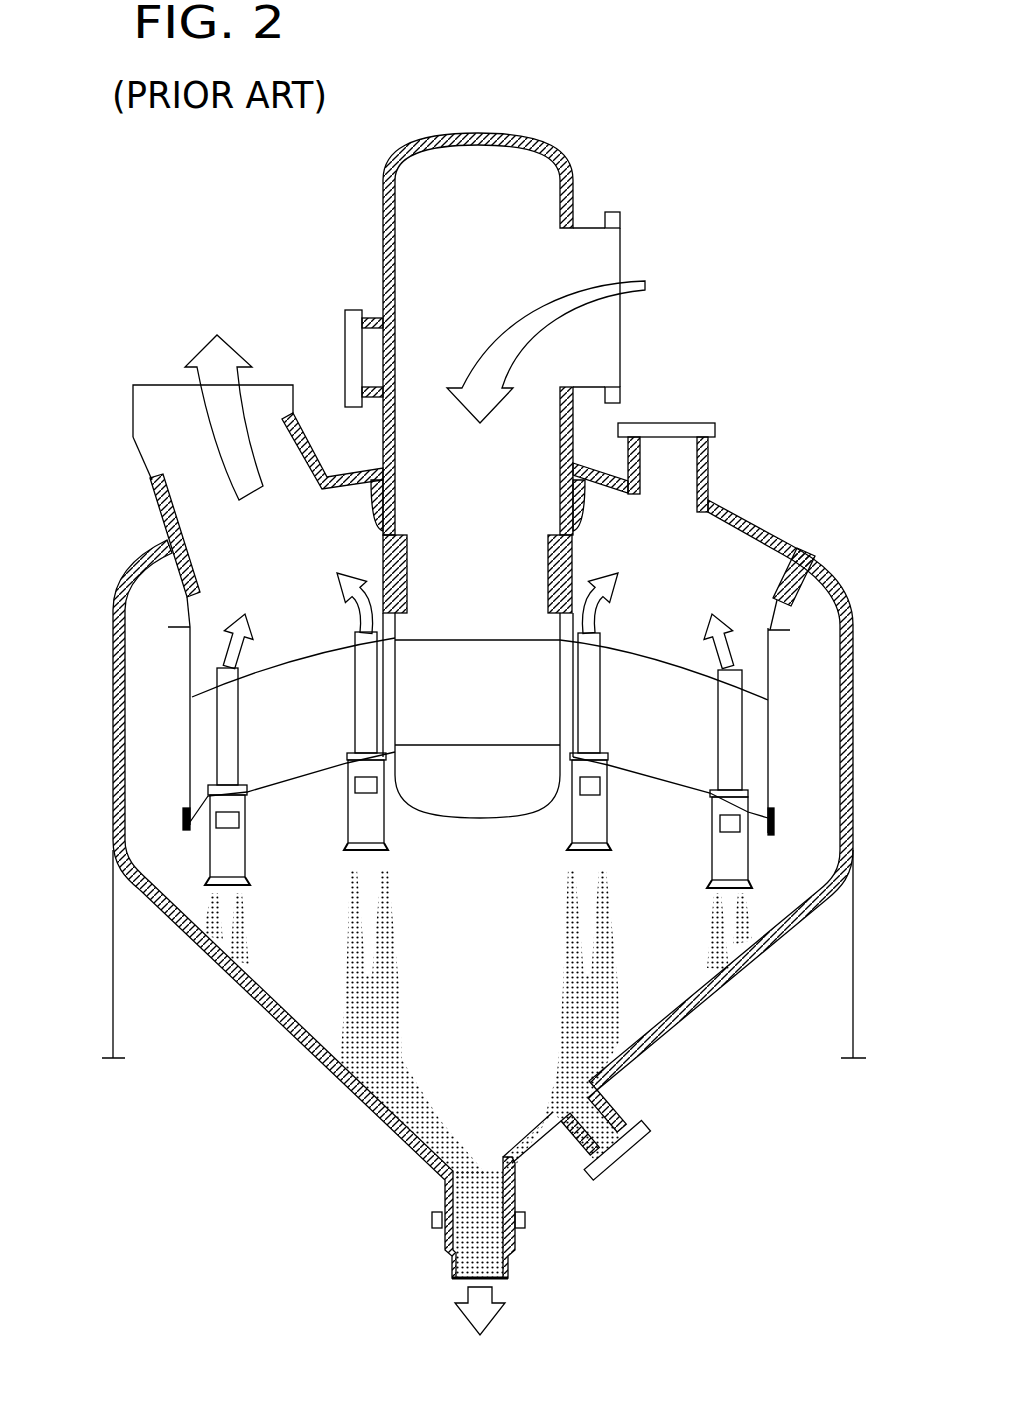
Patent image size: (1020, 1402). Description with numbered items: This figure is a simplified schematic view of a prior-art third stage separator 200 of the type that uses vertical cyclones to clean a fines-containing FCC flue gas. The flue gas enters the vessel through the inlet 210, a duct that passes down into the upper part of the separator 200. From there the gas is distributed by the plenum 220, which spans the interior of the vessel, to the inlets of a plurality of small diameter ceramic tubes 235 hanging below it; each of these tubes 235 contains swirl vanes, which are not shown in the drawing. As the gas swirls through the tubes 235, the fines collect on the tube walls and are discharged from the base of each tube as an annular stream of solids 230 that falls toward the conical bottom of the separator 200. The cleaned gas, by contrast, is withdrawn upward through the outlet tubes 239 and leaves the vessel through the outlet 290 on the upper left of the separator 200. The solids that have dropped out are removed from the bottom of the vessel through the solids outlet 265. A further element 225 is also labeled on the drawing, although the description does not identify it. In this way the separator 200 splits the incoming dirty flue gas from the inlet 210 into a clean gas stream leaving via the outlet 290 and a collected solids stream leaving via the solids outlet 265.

The third stage separator 200 is at (760, 512).
The inlet 210 is at (588, 225).
The plenum 220 is at (319, 723).
The spray nozzle 225 is at (710, 838).
The annular stream of solids 230 is at (248, 947).
The small diameter ceramic tubes 235 is at (247, 855).
The outlet tubes 239 is at (245, 662).
The solids outlet 265 is at (515, 1233).
The outlet 290 is at (130, 437).